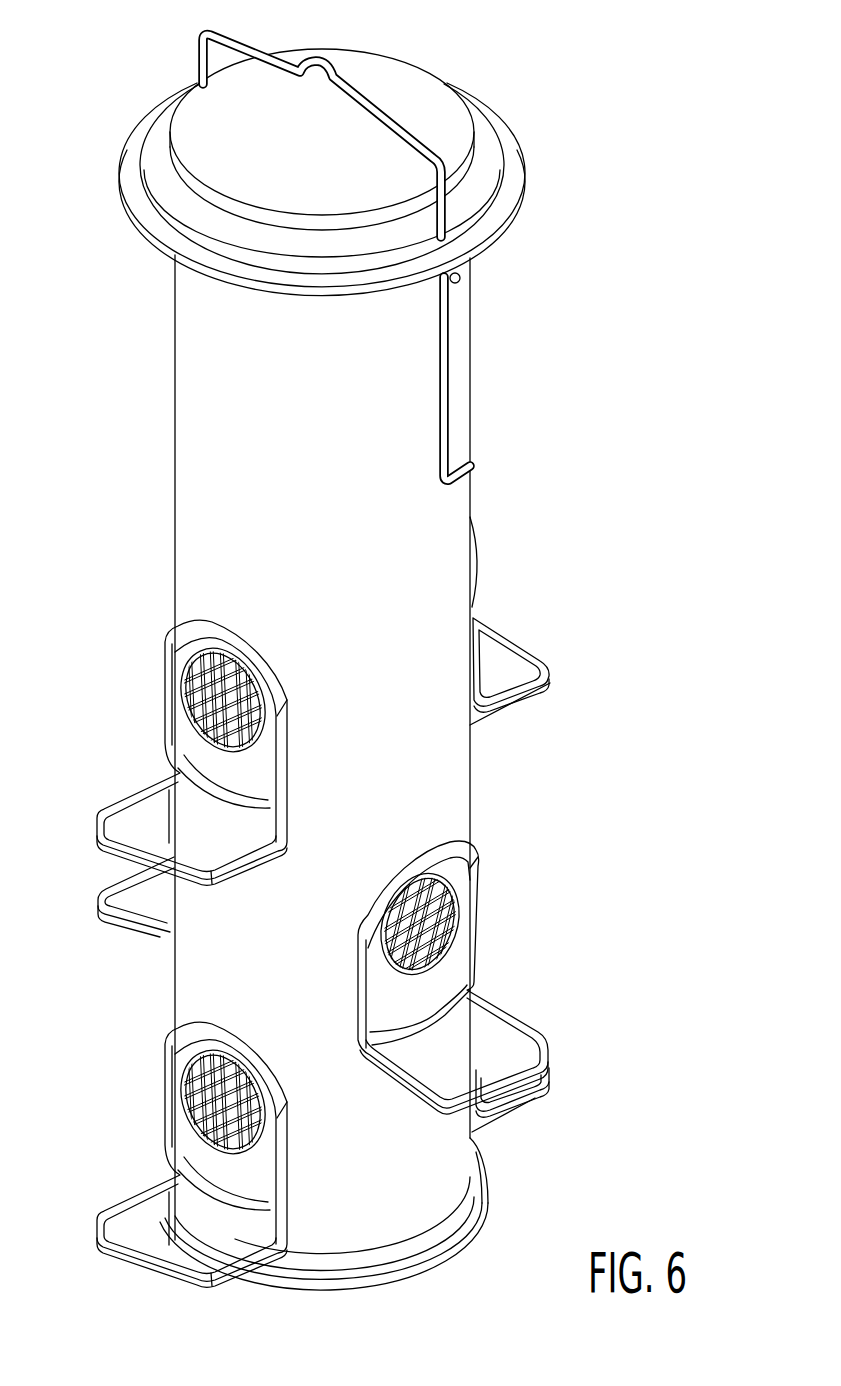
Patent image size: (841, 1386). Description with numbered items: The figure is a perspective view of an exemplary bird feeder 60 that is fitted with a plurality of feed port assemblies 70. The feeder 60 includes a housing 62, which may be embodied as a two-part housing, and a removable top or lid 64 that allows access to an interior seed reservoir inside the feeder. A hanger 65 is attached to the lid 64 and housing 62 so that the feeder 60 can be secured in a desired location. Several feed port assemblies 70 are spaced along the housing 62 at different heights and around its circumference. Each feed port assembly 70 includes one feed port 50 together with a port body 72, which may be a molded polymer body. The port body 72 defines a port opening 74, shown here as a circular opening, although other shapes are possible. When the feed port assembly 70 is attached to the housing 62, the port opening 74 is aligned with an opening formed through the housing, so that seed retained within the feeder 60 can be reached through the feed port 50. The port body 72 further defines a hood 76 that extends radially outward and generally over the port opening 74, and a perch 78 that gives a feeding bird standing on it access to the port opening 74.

The feed port 50 is at (450, 897).
The bird feeder 60 is at (353, 645).
The housing 62 is at (447, 512).
The lid 64 is at (468, 180).
The hanger wire 65 is at (230, 32).
The feed port assembly 70 is at (126, 666).
The port body 72 is at (447, 977).
The port opening 74 is at (472, 904).
The hood 76 is at (505, 932).
The perch 78 is at (548, 1053).